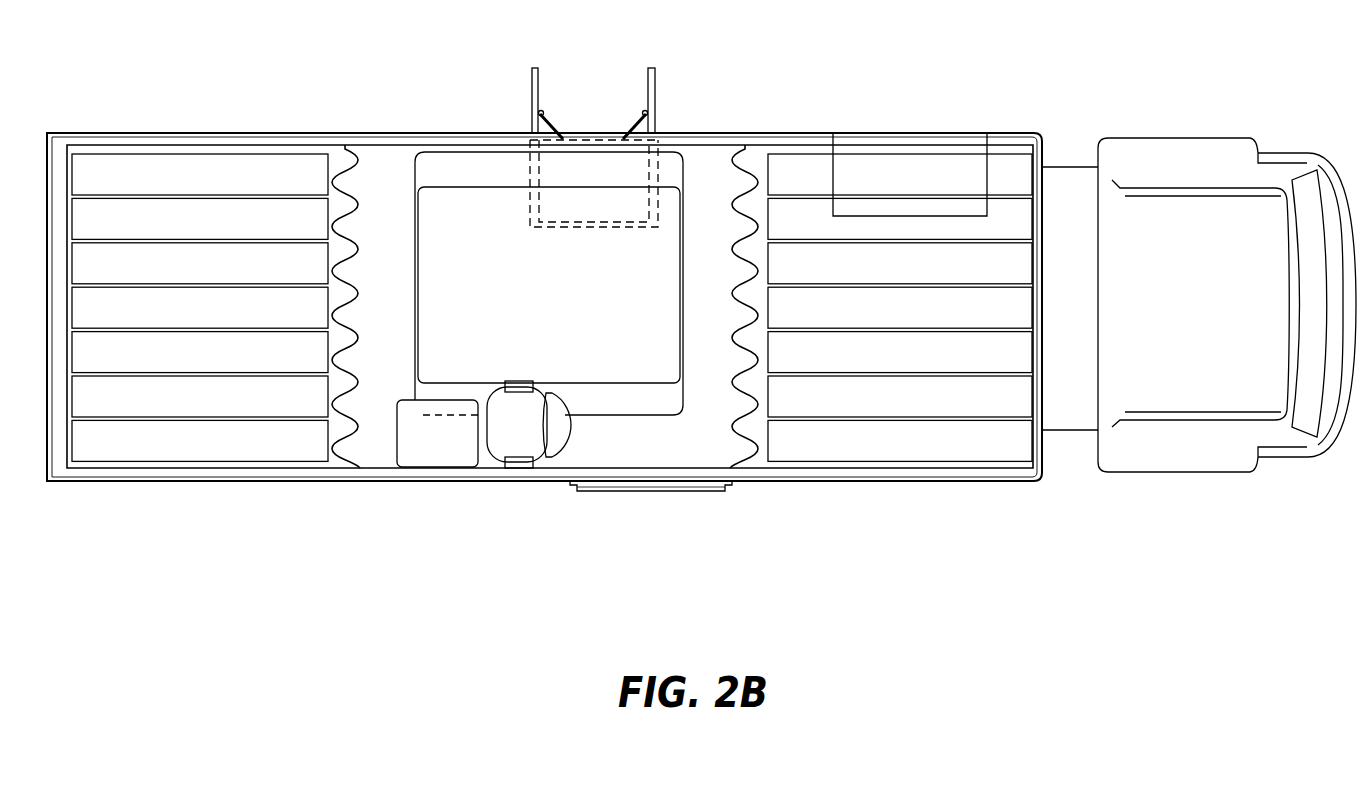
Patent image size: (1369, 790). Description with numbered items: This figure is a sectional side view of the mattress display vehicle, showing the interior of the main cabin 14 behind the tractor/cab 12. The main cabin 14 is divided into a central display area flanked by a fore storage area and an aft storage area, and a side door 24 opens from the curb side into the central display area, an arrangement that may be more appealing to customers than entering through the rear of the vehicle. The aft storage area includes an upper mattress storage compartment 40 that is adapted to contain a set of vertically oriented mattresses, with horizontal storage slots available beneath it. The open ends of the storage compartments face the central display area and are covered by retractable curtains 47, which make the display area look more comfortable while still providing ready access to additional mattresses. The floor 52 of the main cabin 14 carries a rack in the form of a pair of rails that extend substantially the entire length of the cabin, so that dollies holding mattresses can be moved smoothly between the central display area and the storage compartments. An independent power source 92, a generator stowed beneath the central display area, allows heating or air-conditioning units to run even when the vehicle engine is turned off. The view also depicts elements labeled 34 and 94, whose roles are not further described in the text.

The tractor/cab 12 is at (1205, 150).
The main cabin 14 is at (948, 135).
The side door 24 is at (660, 492).
The right shelving 34 is at (1015, 162).
The upper mattress storage compartment 40 is at (182, 175).
The retractable curtains 47 is at (357, 175).
The floor 52 is at (602, 435).
The independent power source 92 is at (597, 158).
The cabinet 94 is at (888, 130).